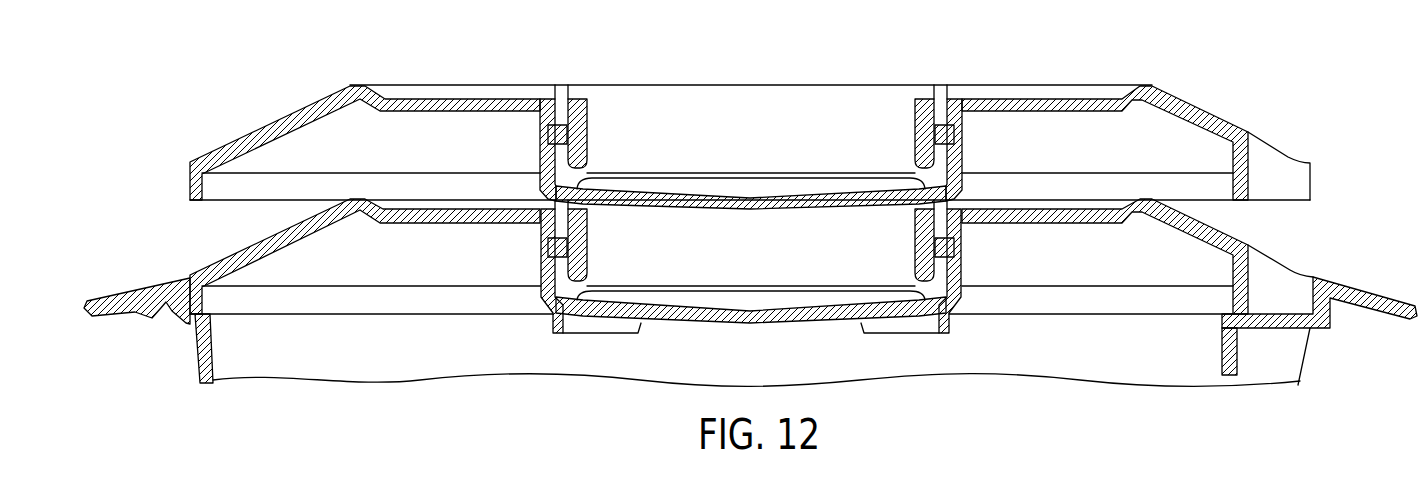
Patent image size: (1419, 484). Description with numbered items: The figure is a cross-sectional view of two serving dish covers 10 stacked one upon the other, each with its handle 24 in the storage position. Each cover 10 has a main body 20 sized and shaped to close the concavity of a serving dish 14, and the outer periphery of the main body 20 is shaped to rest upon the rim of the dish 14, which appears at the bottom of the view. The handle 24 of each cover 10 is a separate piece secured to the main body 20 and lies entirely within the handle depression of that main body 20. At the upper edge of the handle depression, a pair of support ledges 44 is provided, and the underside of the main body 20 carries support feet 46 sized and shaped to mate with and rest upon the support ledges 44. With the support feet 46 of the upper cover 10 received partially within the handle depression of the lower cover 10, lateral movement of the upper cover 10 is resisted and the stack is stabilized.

The serving dish cover 10 is at (254, 128).
The main body 20 is at (1200, 106).
The handle 24 is at (757, 130).
The support ledges 44 is at (548, 227).
The support feet 46 is at (552, 198).
The serving dish 14 is at (1128, 358).